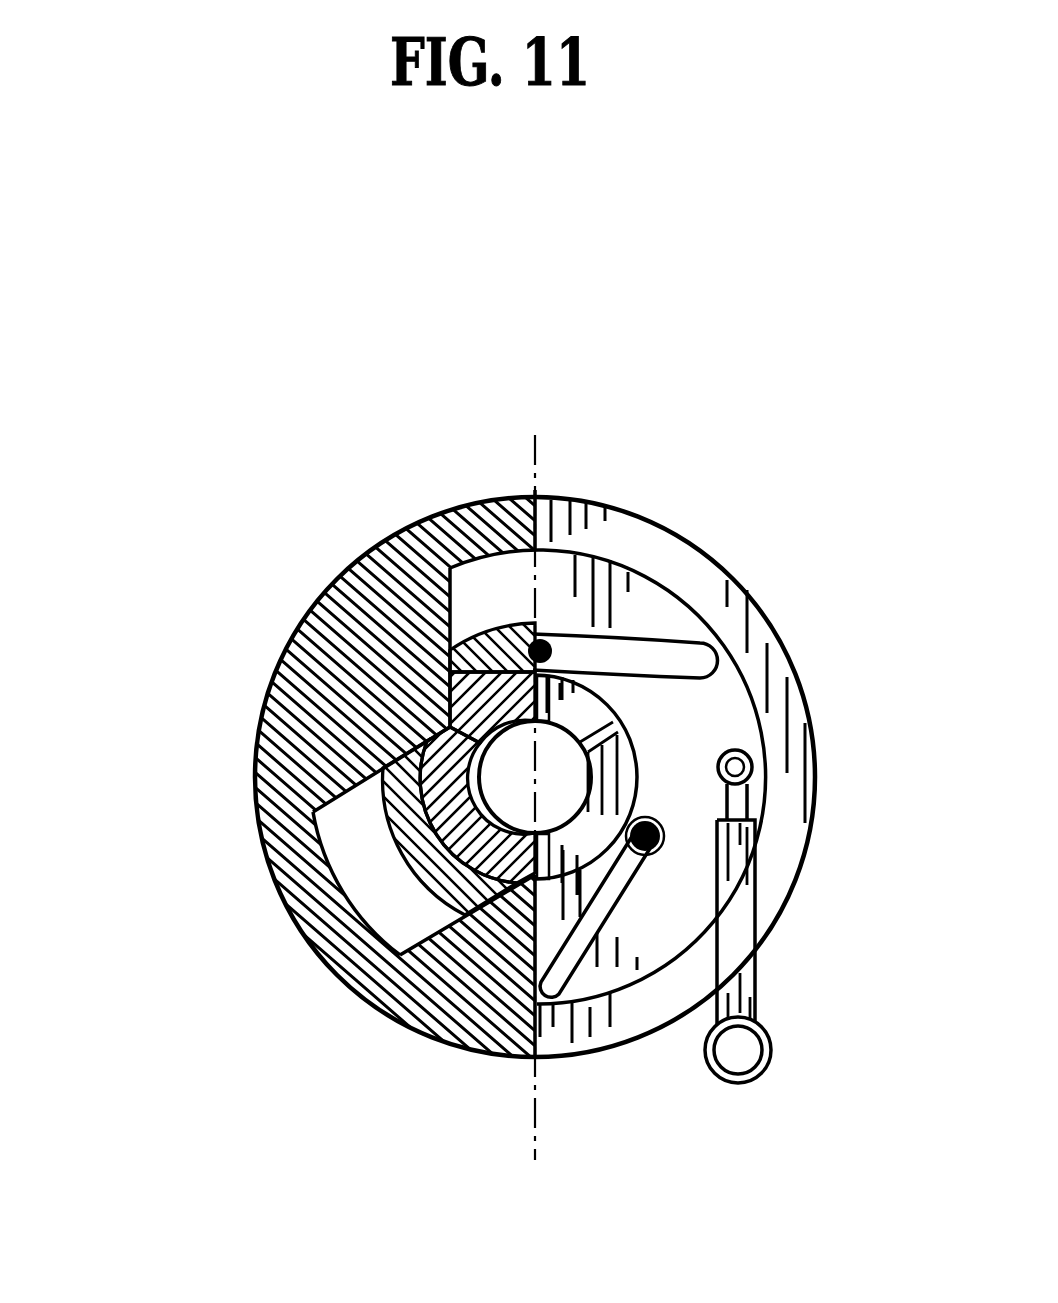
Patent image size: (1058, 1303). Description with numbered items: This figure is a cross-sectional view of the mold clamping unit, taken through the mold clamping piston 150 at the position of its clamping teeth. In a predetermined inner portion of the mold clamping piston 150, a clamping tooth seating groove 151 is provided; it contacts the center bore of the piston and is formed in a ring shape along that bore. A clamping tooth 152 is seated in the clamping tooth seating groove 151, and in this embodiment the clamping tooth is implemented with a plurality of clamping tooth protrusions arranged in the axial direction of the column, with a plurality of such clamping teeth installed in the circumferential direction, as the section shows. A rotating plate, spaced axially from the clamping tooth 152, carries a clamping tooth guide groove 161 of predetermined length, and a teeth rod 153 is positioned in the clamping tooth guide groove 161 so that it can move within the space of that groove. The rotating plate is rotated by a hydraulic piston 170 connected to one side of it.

The mold clamping piston 150 is at (358, 550).
The clamping tooth seating groove 151 is at (272, 772).
The clamping tooth 152 is at (322, 655).
The teeth rod 153 is at (645, 818).
The clamping tooth guide groove 161 is at (638, 668).
The hydraulic piston 170 is at (733, 947).